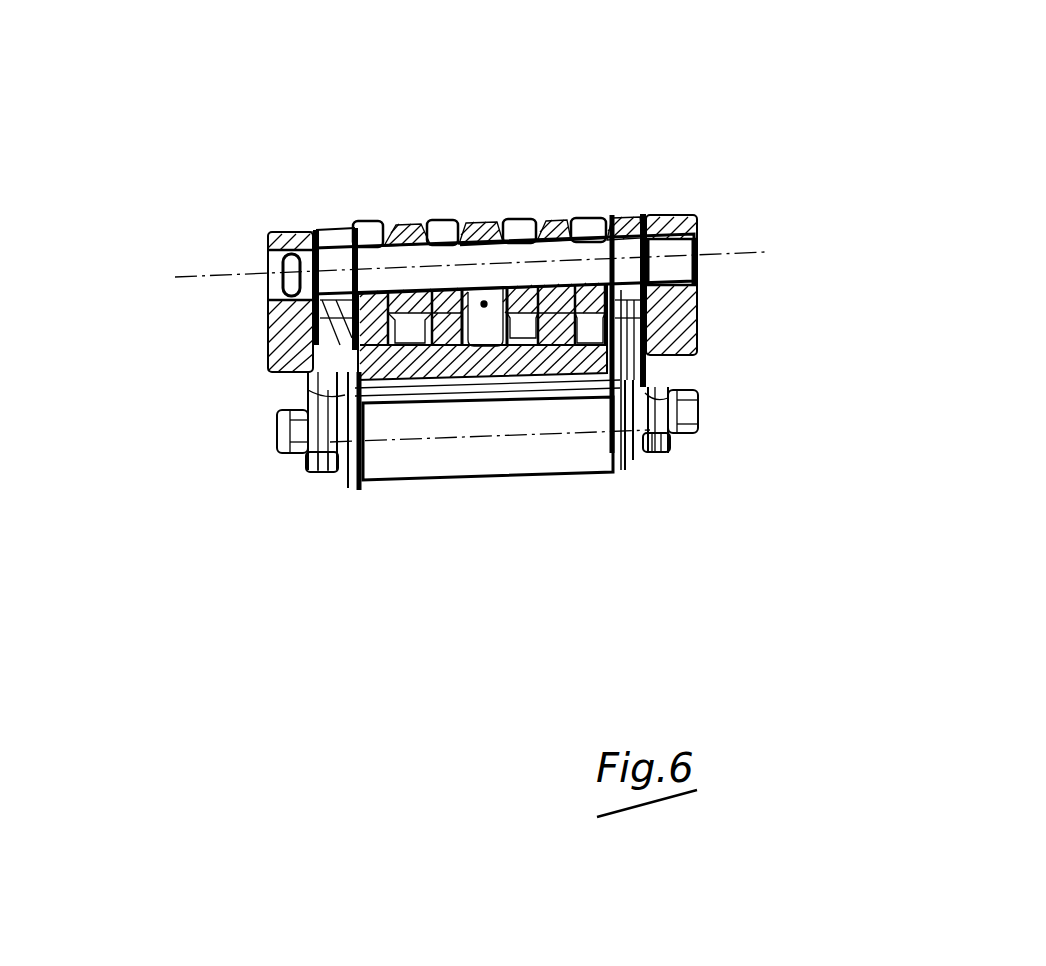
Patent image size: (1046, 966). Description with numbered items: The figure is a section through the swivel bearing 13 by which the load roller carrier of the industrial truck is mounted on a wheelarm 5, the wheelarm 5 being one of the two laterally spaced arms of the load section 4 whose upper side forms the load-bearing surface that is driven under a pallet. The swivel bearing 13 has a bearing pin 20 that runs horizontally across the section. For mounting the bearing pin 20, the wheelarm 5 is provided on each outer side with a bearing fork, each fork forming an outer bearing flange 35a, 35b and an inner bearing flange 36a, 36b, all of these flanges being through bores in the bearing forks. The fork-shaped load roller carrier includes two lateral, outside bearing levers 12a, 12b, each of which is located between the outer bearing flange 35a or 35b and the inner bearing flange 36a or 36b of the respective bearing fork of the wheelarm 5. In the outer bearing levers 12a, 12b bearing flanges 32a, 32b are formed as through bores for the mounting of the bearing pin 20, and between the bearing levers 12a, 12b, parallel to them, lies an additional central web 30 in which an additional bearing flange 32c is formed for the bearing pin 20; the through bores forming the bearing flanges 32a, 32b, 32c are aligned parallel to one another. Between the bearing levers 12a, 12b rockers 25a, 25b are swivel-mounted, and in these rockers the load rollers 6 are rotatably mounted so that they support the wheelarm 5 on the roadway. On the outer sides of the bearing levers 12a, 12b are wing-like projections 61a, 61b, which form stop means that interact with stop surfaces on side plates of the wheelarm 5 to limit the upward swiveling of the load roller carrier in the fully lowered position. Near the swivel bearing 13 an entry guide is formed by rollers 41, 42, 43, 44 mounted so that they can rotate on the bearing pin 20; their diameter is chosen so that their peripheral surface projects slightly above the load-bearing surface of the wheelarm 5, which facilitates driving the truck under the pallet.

The swivel bearing 13 is at (183, 274).
The bearing pin 20 is at (270, 289).
The wheelarm 5 is at (277, 357).
The outer bearing flange 35a is at (283, 232).
The outer bearing flange 35b is at (680, 215).
The bearing flange 32a is at (328, 232).
The bearing flange 32b is at (632, 222).
The additional bearing flange 32c is at (520, 142).
The load section 4 is at (297, 232).
The roller 41 is at (372, 222).
The roller 42 is at (434, 222).
The roller 43 is at (524, 222).
The roller 44 is at (602, 224).
The inner bearing flange 36a is at (404, 226).
The inner bearing flange 36b is at (560, 222).
The load roller 6 is at (482, 465).
The central web 30 is at (484, 306).
The rocker 25a is at (347, 472).
The rocker 25b is at (632, 458).
The wing-like projection 61a is at (280, 453).
The wing-like projection 61b is at (687, 428).
The bearing lever 12a is at (308, 472).
The bearing lever 12b is at (664, 455).